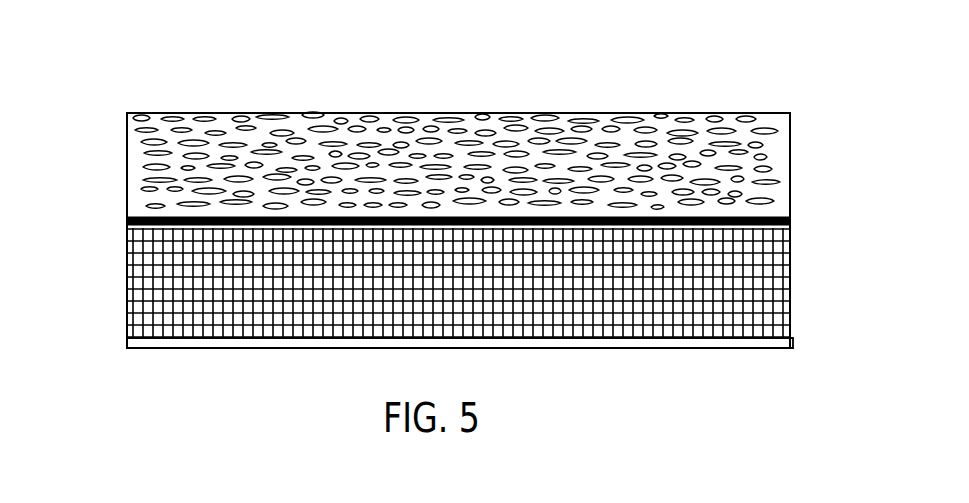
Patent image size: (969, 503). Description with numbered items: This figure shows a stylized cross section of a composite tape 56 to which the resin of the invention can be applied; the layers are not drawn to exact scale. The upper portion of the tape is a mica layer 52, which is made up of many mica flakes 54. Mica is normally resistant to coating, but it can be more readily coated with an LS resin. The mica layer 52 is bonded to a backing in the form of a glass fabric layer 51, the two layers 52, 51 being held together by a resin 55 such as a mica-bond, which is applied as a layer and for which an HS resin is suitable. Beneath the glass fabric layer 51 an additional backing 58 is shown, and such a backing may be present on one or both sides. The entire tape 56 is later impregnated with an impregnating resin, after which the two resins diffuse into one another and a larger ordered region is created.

The glass fabric layer 51 is at (818, 223).
The mica layer 52 is at (503, 112).
The mica flakes 54 is at (248, 154).
The resin 55 is at (445, 218).
The composite tape 56 is at (103, 347).
The additional backing 58 is at (635, 345).